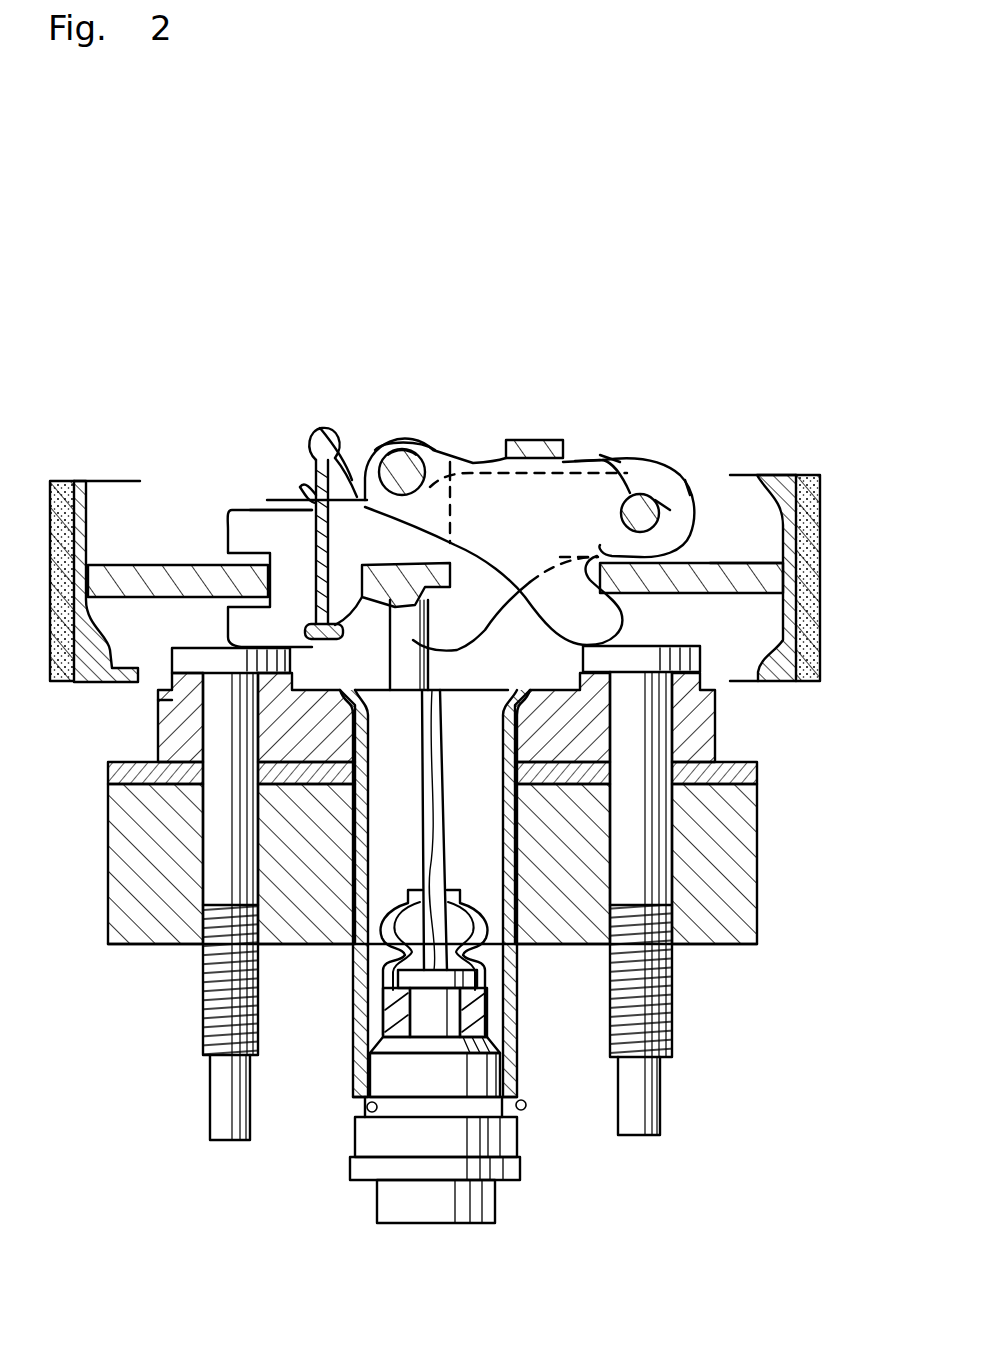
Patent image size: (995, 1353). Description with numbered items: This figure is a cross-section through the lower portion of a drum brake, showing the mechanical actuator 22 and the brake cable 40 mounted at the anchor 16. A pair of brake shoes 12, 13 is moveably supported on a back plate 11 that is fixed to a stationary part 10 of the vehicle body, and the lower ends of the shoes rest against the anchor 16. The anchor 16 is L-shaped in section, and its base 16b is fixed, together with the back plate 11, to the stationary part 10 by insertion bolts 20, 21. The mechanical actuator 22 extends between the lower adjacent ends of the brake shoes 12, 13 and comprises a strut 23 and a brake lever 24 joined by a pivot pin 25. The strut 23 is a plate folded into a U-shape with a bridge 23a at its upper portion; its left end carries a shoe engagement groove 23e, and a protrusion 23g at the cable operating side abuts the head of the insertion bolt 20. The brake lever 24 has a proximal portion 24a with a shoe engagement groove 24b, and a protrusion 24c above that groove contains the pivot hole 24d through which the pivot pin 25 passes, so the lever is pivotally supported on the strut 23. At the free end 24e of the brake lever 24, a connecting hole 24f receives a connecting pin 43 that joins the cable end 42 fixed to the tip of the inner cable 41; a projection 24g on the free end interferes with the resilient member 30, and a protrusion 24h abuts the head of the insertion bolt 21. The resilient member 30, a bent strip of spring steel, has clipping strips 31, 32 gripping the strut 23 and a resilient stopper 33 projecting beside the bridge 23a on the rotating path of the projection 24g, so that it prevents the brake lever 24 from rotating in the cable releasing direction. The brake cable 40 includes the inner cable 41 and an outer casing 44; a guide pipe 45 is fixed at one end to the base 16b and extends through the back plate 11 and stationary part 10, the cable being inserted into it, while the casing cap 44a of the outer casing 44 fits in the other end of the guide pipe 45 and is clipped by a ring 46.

The stationary part 10 is at (715, 945).
The back plate 11 is at (105, 772).
The brake shoe 12 is at (85, 478).
The brake shoe 13 is at (812, 472).
The anchor 16 is at (730, 717).
The base 16b is at (155, 715).
The insertion bolt 20 is at (203, 990).
The insertion bolt 21 is at (666, 1028).
The mechanical actuator 22 is at (543, 408).
The strut 23 is at (488, 632).
The bridge 23a is at (540, 437).
The shoe engagement groove 23e is at (240, 562).
The protrusion 23g is at (238, 658).
The brake lever 24 is at (597, 460).
The proximal portion 24a is at (577, 437).
The shoe engagement groove 24b is at (712, 562).
The protrusion 24c is at (690, 478).
The pivot hole 24d is at (680, 507).
The free end 24e is at (442, 465).
The connecting hole 24f is at (385, 445).
The projection 24g is at (300, 505).
The protrusion 24h is at (605, 647).
The pivot pin 25 is at (640, 494).
The resilient member 30 is at (322, 426).
The clipping strip 31 is at (325, 642).
The clipping strip 32 is at (308, 492).
The resilient stopper 33 is at (332, 428).
The brake cable 40 is at (505, 1205).
The inner cable 41 is at (402, 945).
The cable end 42 is at (386, 645).
The connecting pin 43 is at (407, 452).
The outer casing 44 is at (388, 1202).
The casing cap 44a is at (385, 1075).
The guide pipe 45 is at (520, 1130).
The ring 46 is at (528, 1105).